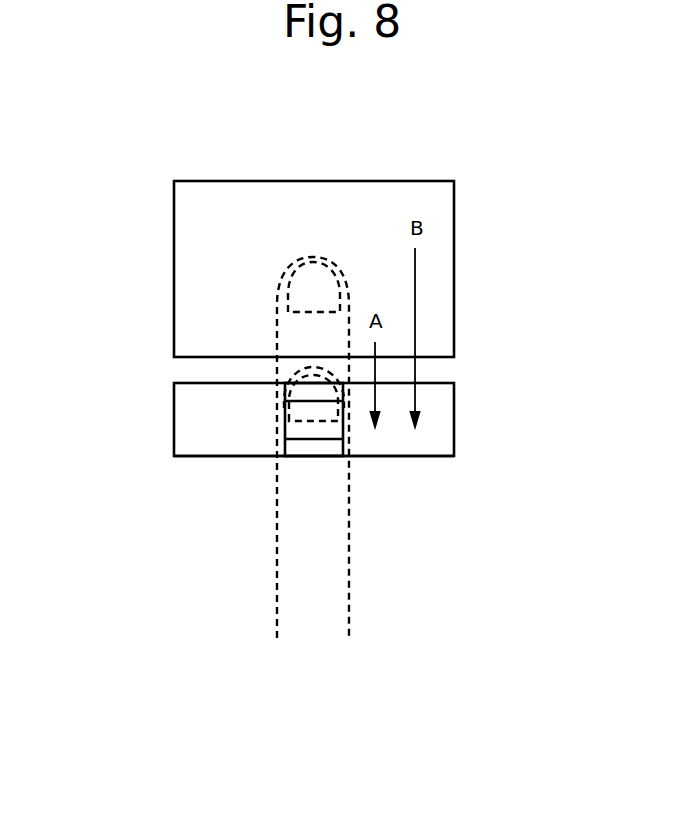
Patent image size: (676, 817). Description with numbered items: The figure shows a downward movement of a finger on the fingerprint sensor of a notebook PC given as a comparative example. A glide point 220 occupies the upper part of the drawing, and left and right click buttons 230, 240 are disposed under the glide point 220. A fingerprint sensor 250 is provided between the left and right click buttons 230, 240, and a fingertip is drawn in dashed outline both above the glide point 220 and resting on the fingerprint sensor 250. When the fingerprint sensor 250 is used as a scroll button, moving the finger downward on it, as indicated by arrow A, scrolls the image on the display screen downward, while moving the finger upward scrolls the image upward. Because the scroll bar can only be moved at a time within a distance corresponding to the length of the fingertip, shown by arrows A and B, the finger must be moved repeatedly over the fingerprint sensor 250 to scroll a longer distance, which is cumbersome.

The glide point 220 is at (215, 207).
The left click button 230 is at (190, 425).
The right click button 240 is at (433, 443).
The fingerprint sensor 250 is at (318, 430).